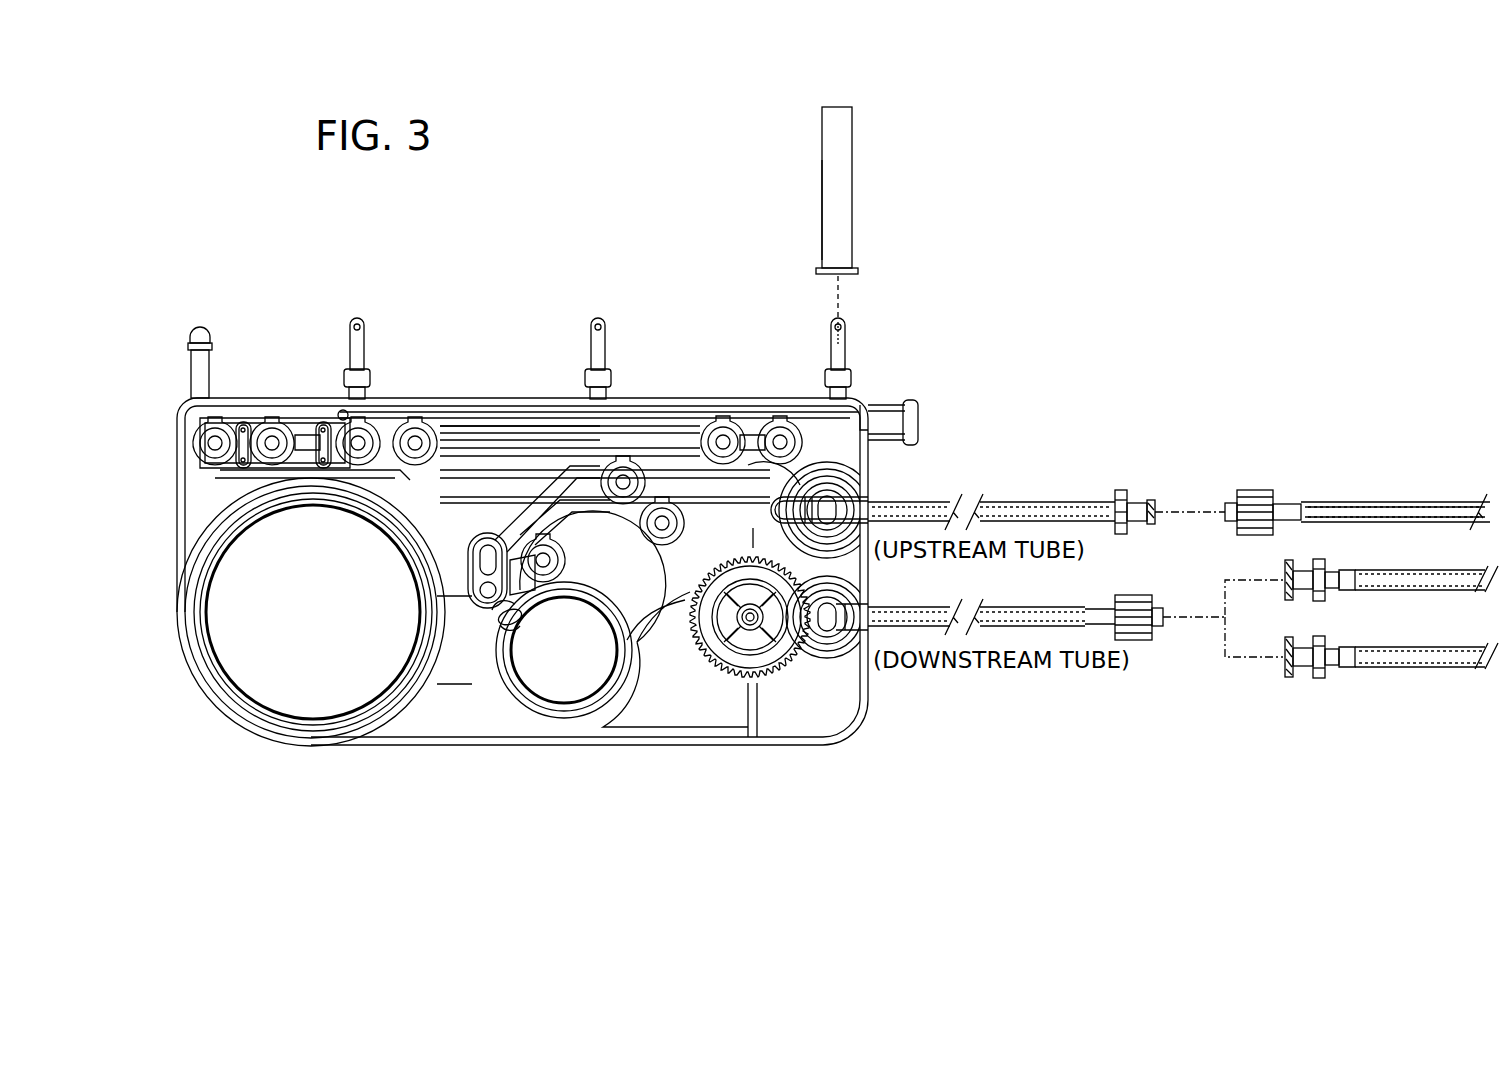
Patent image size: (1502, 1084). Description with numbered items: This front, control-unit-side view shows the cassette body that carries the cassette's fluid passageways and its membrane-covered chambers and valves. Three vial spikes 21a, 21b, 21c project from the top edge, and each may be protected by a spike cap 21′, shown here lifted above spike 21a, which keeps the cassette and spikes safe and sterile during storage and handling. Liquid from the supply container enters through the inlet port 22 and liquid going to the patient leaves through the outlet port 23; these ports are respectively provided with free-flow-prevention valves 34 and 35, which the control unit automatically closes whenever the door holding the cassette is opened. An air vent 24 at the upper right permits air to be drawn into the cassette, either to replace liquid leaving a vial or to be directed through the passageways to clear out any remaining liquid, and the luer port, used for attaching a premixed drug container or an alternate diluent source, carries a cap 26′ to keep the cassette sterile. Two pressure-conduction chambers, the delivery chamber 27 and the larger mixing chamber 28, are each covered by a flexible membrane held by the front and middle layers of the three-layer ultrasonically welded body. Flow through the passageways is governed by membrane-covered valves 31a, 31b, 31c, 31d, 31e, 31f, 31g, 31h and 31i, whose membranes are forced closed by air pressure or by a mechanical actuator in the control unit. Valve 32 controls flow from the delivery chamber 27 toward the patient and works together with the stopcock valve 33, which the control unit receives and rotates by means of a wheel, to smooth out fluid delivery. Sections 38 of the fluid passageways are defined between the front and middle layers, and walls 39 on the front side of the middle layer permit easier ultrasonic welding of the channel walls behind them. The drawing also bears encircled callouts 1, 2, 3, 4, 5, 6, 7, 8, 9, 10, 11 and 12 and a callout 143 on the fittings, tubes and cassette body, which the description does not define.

The housing 1 is at (550, 746).
The connector 2 is at (1118, 490).
The connector 3 is at (1237, 490).
The connector 4 is at (1280, 503).
The pin 5 is at (610, 345).
The cap 6 is at (208, 330).
The upstream tube 7 is at (1043, 503).
The downstream tube 8 is at (1030, 607).
The port 9 is at (914, 412).
The tube 10 is at (852, 180).
The coupler 11 is at (1285, 572).
The coupler 12 is at (1289, 678).
The spike cap 21′ is at (822, 222).
The vial spike 21a is at (830, 338).
The vial spike 21b is at (590, 338).
The vial spike 21c is at (366, 340).
The inlet port 22 is at (912, 503).
The outlet port 23 is at (900, 607).
The air vent 24 is at (888, 405).
The cap 26′ is at (215, 340).
The delivery chamber 27 is at (581, 614).
The mixing chamber 28 is at (313, 612).
The valve 31a is at (686, 540).
The valve 31b is at (566, 550).
The valve 31c is at (622, 505).
The valve 31d is at (765, 425).
The valve 31e is at (708, 425).
The valve 31f is at (420, 425).
The valve 31g is at (360, 466).
The valve 31h is at (283, 425).
The valve 31i is at (193, 444).
The valve 32 is at (470, 538).
The stopcock valve 33 is at (780, 672).
The free-flow-prevention valve 34 is at (862, 496).
The free-flow-prevention valve 35 is at (838, 645).
The sections of the fluid passageways 38 is at (245, 422).
The walls 39 is at (480, 468).
The inlet 143 is at (520, 620).